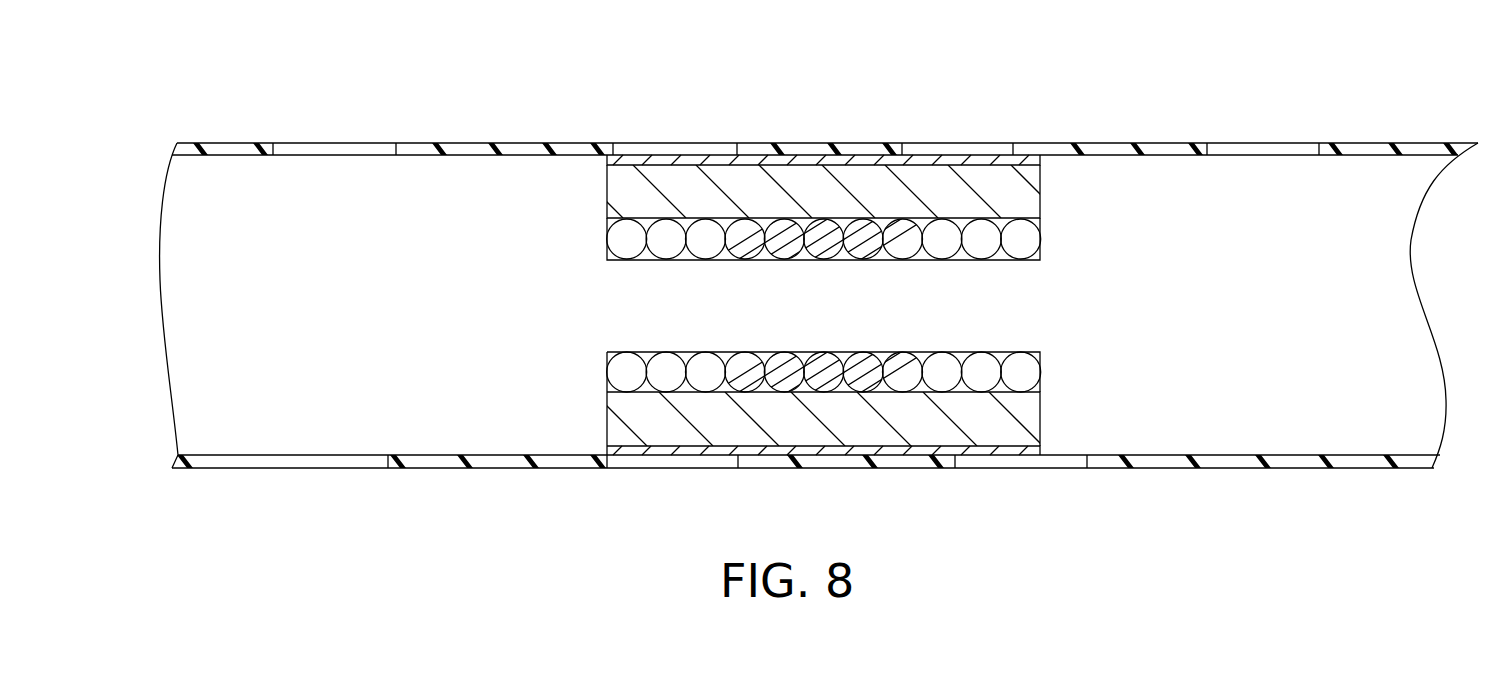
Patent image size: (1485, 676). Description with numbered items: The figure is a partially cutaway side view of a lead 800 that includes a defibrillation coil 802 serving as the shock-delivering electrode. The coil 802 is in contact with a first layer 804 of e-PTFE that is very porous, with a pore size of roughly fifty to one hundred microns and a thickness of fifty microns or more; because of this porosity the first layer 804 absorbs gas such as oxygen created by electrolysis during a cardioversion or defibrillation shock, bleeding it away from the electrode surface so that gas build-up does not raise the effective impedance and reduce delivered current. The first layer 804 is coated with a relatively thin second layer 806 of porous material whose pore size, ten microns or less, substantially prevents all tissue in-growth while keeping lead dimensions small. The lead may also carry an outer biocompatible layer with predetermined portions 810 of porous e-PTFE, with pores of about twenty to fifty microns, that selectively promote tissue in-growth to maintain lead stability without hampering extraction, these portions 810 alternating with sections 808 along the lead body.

The lead 800 is at (1189, 98).
The defibrillation coil 802 is at (1025, 240).
The first layer 804 is at (1033, 198).
The second layer 806 is at (1040, 158).
The striped jacket sections 808 is at (835, 143).
The predetermined portions 810 is at (375, 143).